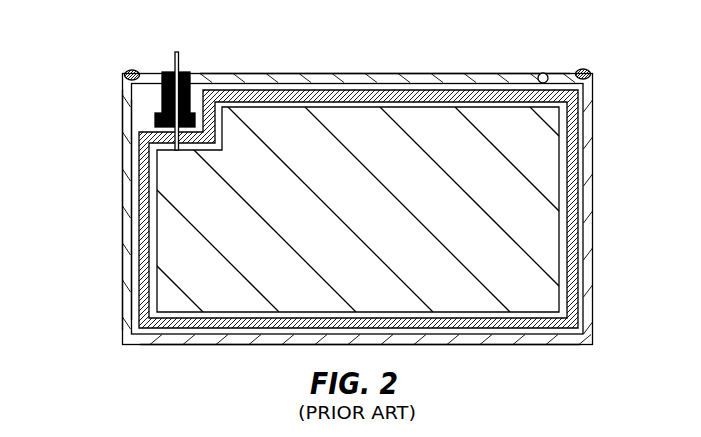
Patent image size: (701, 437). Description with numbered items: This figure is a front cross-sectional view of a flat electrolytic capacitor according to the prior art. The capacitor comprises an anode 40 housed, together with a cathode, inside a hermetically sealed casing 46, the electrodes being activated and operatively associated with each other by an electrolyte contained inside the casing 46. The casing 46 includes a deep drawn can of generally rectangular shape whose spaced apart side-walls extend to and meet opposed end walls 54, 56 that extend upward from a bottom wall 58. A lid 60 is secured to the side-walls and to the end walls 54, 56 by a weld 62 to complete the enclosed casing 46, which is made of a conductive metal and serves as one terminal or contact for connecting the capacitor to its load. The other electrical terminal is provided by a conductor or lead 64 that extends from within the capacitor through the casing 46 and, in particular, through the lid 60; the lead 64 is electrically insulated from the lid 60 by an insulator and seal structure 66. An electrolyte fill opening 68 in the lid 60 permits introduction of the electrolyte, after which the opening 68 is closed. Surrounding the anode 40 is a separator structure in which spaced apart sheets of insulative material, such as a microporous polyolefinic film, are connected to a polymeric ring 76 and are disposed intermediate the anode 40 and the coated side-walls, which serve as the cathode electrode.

The anode 40 is at (185, 252).
The casing 46 is at (126, 312).
The end wall 54 is at (588, 137).
The end wall 56 is at (128, 141).
The bottom wall 58 is at (490, 347).
The lid 60 is at (308, 74).
The weld 62 is at (125, 72).
The lead 64 is at (180, 58).
The insulator and seal structure 66 is at (165, 72).
The electrolyte fill opening 68 is at (540, 72).
The polymeric ring 76 is at (572, 187).